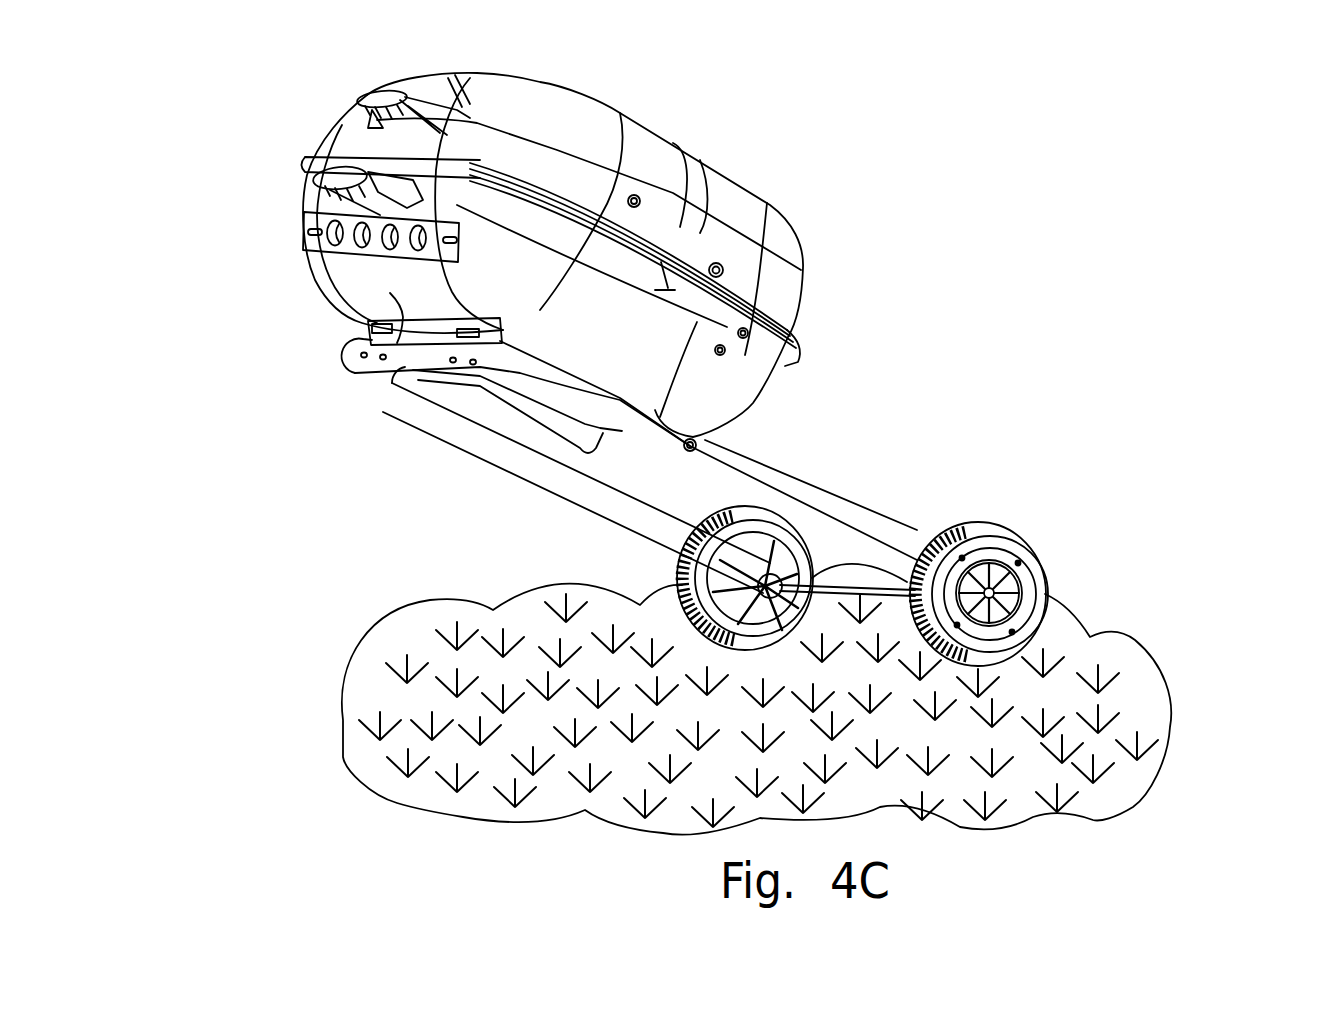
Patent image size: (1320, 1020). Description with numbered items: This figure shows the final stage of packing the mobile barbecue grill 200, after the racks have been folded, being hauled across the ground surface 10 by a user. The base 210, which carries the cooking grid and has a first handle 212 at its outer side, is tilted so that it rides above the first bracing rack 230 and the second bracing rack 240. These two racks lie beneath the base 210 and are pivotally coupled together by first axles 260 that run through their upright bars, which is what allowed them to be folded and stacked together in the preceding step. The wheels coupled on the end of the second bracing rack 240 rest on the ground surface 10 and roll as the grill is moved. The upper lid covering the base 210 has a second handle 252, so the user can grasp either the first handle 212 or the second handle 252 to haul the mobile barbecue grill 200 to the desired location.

The ground surface 10 is at (1147, 702).
The mobile barbecue grill 200 is at (1017, 188).
The base 210 is at (750, 396).
The first handle 212 is at (365, 205).
The first bracing rack 230 is at (613, 520).
The second bracing rack 240 is at (848, 521).
The second handle 252 is at (358, 97).
The first axles 260 is at (703, 445).